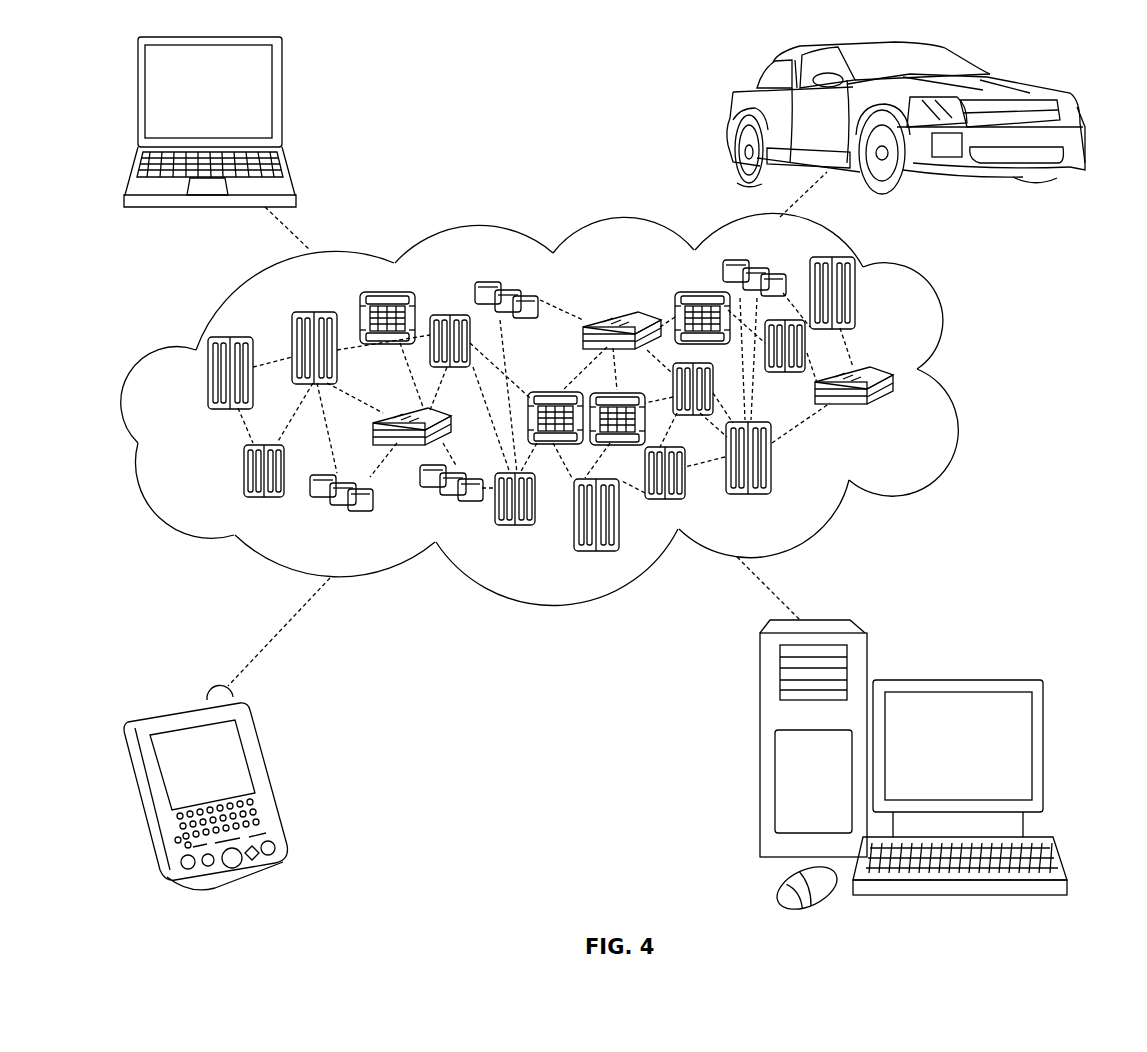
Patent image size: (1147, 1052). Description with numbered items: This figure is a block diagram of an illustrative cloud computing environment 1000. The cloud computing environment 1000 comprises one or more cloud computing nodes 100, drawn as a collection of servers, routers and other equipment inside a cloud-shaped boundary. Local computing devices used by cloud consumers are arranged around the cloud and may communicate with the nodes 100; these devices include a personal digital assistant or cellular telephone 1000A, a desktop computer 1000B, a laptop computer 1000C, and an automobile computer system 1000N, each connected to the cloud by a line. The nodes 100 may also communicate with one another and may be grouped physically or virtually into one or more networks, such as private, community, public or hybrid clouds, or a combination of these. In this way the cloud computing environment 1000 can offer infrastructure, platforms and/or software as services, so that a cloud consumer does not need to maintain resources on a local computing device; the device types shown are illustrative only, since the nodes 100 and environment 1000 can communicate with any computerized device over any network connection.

The cloud computing nodes 100 is at (897, 410).
The cloud computing environment 1000 is at (582, 409).
The personal digital assistant (PDA) or cellular telephone 1000A is at (270, 777).
The desktop computer 1000B is at (955, 678).
The laptop computer 1000C is at (280, 100).
The automobile computer system 1000N is at (730, 118).